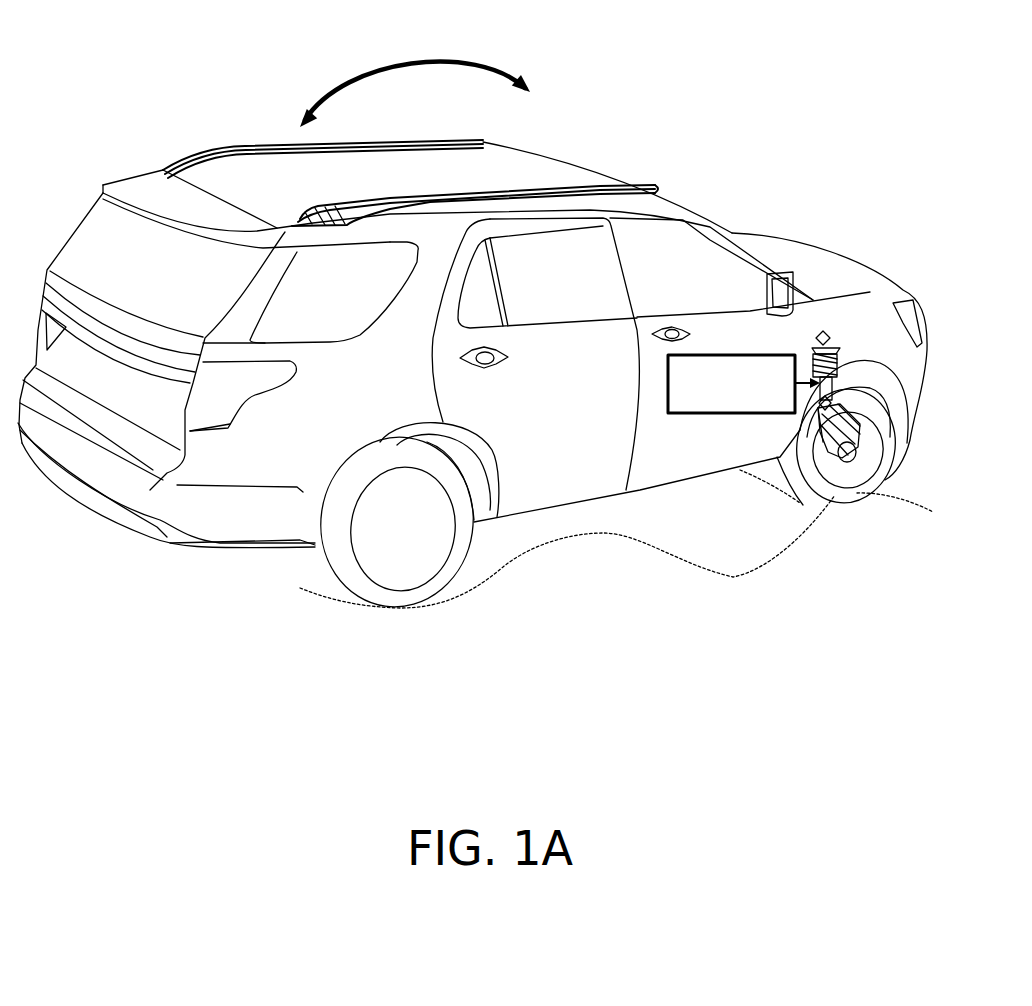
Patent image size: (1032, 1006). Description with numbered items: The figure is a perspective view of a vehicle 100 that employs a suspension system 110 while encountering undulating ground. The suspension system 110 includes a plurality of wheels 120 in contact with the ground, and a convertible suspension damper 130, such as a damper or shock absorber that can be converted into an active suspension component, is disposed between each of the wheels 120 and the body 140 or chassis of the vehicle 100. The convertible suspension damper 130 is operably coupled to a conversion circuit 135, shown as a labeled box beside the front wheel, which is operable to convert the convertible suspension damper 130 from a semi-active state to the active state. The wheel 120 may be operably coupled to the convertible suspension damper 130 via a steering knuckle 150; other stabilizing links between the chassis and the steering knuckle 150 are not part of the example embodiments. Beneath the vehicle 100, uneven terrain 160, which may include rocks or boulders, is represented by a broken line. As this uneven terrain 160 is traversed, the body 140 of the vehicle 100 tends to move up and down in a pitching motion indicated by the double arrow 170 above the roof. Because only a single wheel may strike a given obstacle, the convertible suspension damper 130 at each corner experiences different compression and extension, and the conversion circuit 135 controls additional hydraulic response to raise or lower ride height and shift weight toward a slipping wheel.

The vehicle 100 is at (473, 331).
The suspension system 110 is at (820, 480).
The wheels 120 is at (433, 583).
The convertible suspension damper 130 is at (824, 331).
The conversion circuit 135 is at (719, 355).
The body 140 is at (262, 508).
The steering knuckle 150 is at (803, 450).
The uneven terrain 160 is at (735, 575).
The double arrow 170 is at (380, 70).